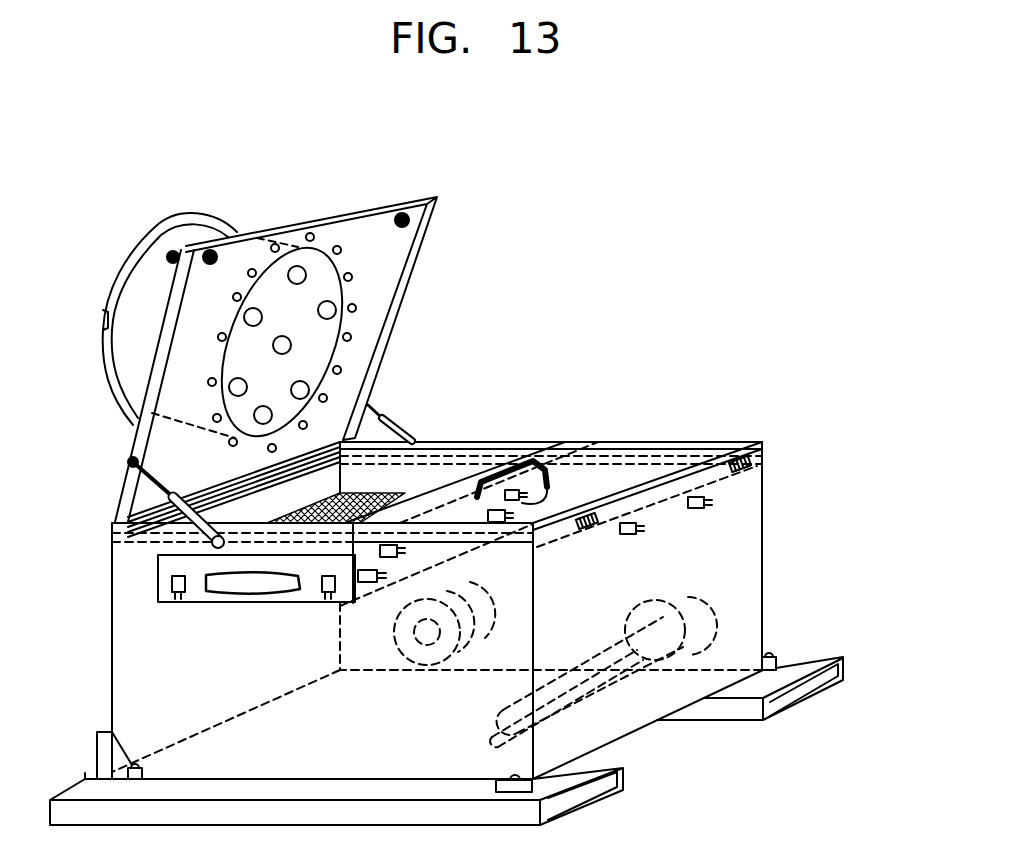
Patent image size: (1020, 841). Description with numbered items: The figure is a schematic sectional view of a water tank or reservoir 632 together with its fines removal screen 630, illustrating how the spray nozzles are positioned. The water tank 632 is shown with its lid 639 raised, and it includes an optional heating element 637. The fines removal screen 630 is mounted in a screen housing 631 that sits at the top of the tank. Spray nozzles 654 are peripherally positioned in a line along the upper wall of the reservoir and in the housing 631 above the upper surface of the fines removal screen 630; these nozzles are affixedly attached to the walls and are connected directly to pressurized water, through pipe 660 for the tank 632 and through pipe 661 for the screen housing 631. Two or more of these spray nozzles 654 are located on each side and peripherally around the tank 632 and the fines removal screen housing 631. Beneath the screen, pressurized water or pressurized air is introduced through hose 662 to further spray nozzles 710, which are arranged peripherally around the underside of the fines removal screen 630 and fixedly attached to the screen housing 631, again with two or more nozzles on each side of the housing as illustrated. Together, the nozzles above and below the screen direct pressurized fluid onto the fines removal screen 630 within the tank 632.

The water tank 632 is at (784, 531).
The lid 639 is at (370, 228).
The fines removal screen 630 is at (366, 492).
The housing 631 is at (464, 510).
The pipe 661 is at (551, 484).
The pipe 660 is at (703, 499).
The spray nozzles 654 is at (687, 497).
The hose 662 is at (179, 597).
The spray nozzles 710 is at (172, 580).
The heating element 637 is at (597, 693).